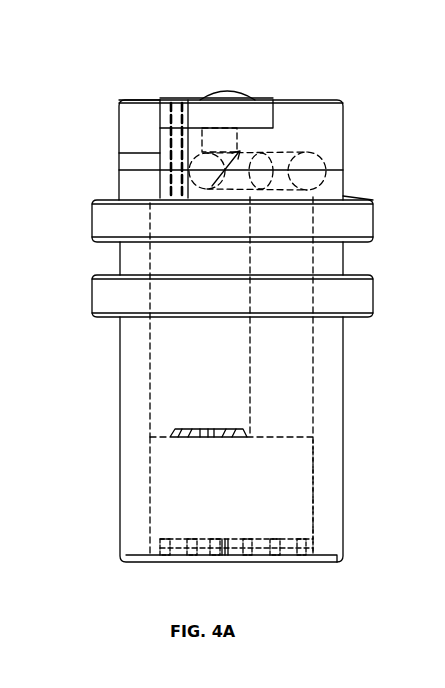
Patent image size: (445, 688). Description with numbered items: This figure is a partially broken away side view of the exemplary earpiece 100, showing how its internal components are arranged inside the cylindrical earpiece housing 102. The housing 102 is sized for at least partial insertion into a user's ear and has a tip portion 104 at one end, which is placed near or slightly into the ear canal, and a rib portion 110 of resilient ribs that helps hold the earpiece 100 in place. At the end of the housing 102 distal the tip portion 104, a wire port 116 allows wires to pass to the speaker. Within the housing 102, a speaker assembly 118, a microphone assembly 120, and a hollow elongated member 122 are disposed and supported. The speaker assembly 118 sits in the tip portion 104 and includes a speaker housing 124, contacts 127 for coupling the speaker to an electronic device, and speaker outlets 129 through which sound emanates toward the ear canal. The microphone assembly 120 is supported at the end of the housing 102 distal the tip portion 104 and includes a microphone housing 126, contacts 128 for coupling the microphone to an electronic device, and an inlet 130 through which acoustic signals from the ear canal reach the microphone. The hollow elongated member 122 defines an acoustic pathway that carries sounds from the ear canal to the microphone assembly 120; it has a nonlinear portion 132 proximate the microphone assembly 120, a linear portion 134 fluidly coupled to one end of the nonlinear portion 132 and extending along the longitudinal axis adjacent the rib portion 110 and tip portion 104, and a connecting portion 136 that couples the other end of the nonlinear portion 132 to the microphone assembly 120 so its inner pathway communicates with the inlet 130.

The earpiece 100 is at (312, 80).
The earpiece housing 102 is at (118, 122).
The tip portion 104 is at (80, 320).
The rib portion 110 is at (80, 203).
The wire port 116 is at (122, 100).
The speaker assembly 118 is at (313, 487).
The microphone assembly 120 is at (212, 93).
The hollow elongated member 122 is at (345, 169).
The speaker housing 124 is at (288, 512).
The microphone housing 126 is at (272, 101).
The contacts 127 is at (222, 430).
The contacts 128 is at (159, 122).
The speaker outlets 129 is at (263, 557).
The inlet 130 is at (200, 132).
The nonlinear portion 132 is at (373, 196).
The linear portion 134 is at (250, 340).
The connecting portion 136 is at (238, 137).